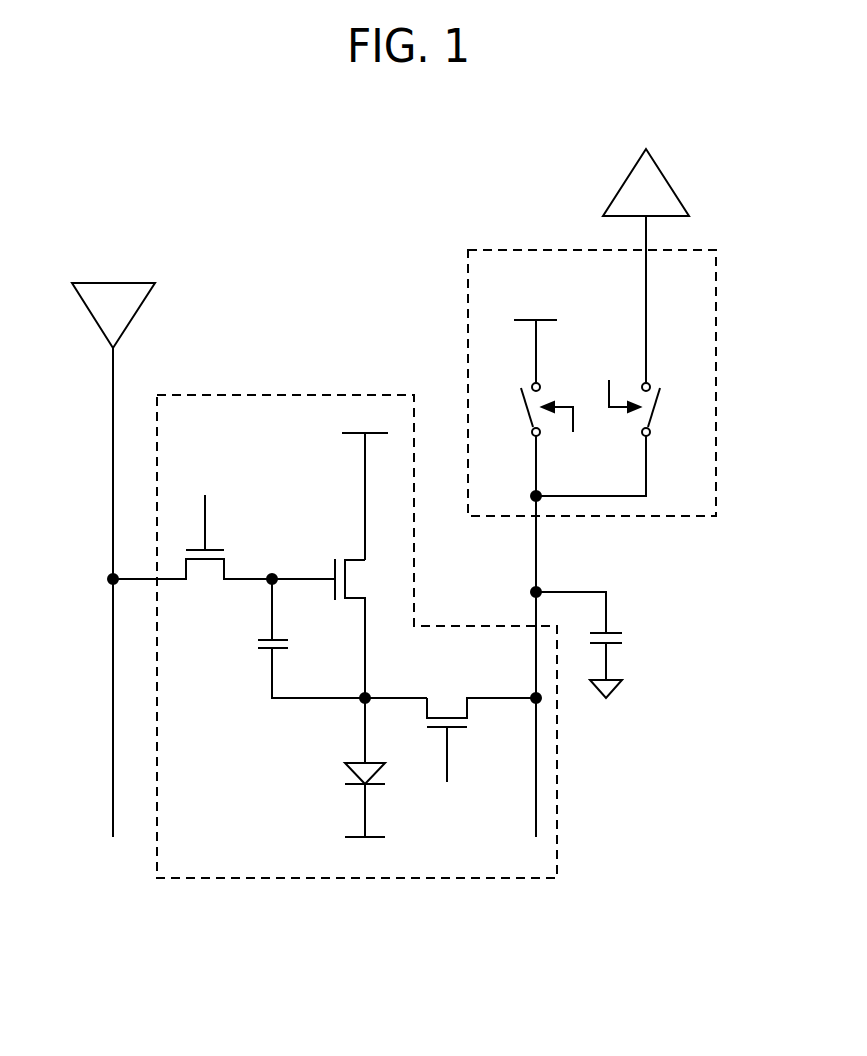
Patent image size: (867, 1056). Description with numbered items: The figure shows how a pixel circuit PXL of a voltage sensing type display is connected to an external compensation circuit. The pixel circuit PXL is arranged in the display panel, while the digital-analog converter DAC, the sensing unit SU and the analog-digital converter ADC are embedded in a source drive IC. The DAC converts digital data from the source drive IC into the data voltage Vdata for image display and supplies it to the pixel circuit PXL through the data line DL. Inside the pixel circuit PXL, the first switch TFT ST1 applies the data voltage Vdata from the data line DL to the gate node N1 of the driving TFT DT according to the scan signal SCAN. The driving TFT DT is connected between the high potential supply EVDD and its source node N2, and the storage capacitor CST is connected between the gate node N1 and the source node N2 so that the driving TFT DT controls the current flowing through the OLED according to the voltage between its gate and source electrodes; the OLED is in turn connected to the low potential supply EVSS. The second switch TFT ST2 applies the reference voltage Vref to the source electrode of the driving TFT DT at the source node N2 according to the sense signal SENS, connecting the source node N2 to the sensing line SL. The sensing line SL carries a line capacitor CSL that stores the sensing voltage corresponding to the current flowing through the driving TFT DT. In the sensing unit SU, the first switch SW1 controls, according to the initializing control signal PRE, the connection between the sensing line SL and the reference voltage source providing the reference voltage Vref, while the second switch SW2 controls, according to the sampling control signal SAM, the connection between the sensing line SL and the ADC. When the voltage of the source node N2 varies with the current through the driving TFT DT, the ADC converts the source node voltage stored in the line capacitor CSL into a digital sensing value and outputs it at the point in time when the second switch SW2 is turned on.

The pixel circuit PXL is at (557, 768).
The sensing unit SU is at (716, 328).
The digital-analog converter DAC is at (113, 315).
The data voltage Vdata is at (76, 374).
The data line DL is at (113, 507).
The first switch TFT ST1 is at (192, 579).
The scan signal SCAN is at (205, 508).
The gate node N1 is at (297, 564).
The high potential power supply EVDD is at (365, 481).
The driving TFT DT is at (364, 628).
The storage capacitor CST is at (311, 638).
The source node N2 is at (393, 685).
The second switch TFT ST2 is at (481, 697).
The sense signal SENS is at (447, 770).
The element OLED is at (339, 767).
The low potential power supply EVSS is at (364, 853).
The sensing line SL is at (536, 557).
The line capacitor CSL is at (598, 645).
The analog-digital converter ADC is at (646, 266).
The reference voltage Vref is at (535, 336).
The first switch SW1 is at (509, 409).
The initializing control signal PRE is at (563, 433).
The second switch SW2 is at (621, 439).
The sampling control signal SAM is at (614, 381).